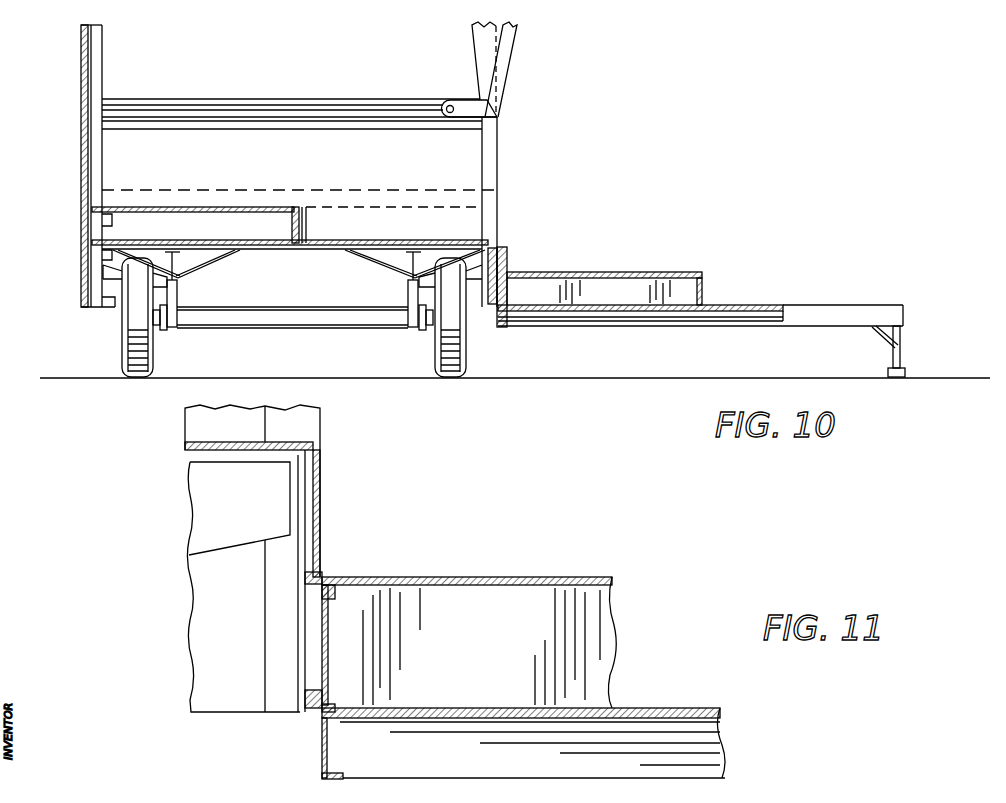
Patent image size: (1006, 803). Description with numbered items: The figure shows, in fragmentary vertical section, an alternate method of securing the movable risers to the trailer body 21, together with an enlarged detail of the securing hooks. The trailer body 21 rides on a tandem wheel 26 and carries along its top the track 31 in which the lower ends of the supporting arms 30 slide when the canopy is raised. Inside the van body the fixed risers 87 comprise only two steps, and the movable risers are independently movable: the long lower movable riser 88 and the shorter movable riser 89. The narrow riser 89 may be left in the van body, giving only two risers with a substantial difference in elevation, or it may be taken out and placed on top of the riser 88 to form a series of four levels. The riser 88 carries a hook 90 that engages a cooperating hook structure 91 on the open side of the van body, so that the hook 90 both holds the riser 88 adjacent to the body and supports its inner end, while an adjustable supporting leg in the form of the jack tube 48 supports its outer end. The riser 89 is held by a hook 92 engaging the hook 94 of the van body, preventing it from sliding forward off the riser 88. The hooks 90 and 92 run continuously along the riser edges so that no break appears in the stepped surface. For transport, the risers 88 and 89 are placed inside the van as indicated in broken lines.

In FIG. 10, the trailer body 21 is at (93, 42).
In FIG. 10, the tandem wheel 26 is at (140, 360).
In FIG. 10, the supporting arm 30 is at (510, 37).
In FIG. 10, the track 31 is at (412, 112).
In FIG. 10, the jack tube 48 is at (900, 329).
In FIG. 10, the fixed risers 87 is at (217, 210).
In FIG. 10, the long lower movable riser 88 is at (343, 190).
In FIG. 11, the long lower movable riser 88 is at (685, 710).
In FIG. 10, the shorter movable riser 89 is at (648, 273).
In FIG. 11, the shorter movable riser 89 is at (540, 575).
In FIG. 11, the hook 90 is at (312, 698).
In FIG. 11, the hook structure 91 is at (313, 712).
In FIG. 11, the hook 92 is at (306, 580).
In FIG. 11, the hook 94 is at (308, 594).